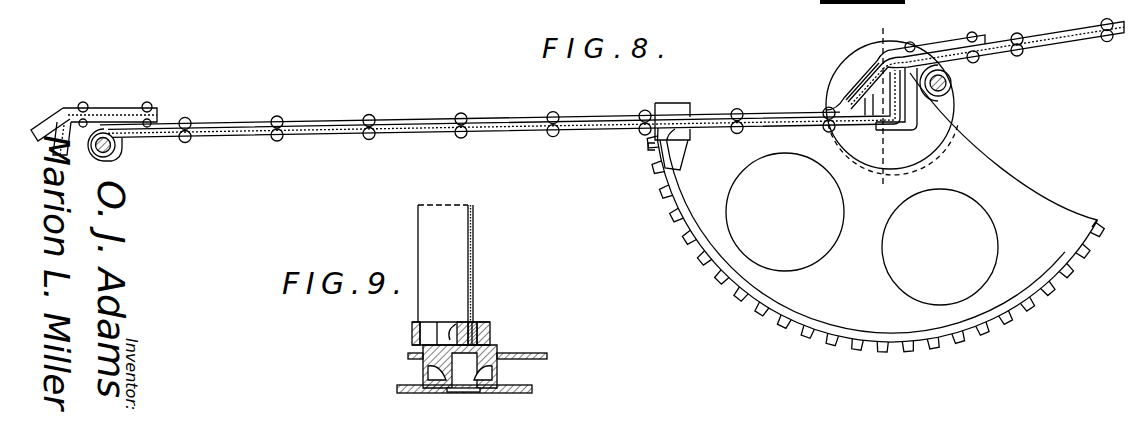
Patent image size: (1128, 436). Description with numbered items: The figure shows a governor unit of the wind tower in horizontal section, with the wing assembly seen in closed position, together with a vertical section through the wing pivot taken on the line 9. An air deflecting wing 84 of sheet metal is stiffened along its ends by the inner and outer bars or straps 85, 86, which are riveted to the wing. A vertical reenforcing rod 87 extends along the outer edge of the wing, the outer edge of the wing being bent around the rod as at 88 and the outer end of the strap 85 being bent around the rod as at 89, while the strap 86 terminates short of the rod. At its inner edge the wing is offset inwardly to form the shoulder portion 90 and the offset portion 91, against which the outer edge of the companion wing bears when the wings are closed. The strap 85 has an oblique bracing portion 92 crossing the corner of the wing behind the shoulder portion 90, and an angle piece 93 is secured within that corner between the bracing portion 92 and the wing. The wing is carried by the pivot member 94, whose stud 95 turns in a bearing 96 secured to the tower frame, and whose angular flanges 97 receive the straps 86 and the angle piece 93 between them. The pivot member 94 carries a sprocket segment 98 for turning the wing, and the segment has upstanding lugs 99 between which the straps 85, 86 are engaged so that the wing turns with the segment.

In FIG. 8, the air deflecting wings 84 is at (496, 120).
In FIG. 9, the air deflecting wings 84 is at (475, 246).
In FIG. 8, the inner bars or straps 85 is at (417, 121).
In FIG. 9, the inner bars or straps 85 is at (412, 335).
In FIG. 8, the outer bars or straps 86 is at (423, 136).
In FIG. 9, the outer bars or straps 86 is at (493, 327).
In FIG. 8, the reenforcing rod 87 is at (110, 154).
In FIG. 8, the bend of wing around rod 88 is at (117, 146).
In FIG. 8, the bend of strap around rod 89 is at (103, 161).
In FIG. 8, the shoulder portions 90 is at (903, 107).
In FIG. 9, the shoulder portions 90 is at (438, 238).
In FIG. 8, the offset portions 91 is at (101, 117).
In FIG. 8, the oblique bracing portions 92 is at (858, 92).
In FIG. 8, the angle pieces 93 is at (868, 106).
In FIG. 9, the angle pieces 93 is at (452, 327).
In FIG. 8, the lower pivot member 94 is at (920, 125).
In FIG. 9, the lower pivot member 94 is at (490, 350).
In FIG. 9, the stud 95 is at (460, 391).
In FIG. 8, the bearing 96 is at (953, 106).
In FIG. 9, the bearing 96 is at (500, 392).
In FIG. 8, the angular flanges 97 is at (878, 140).
In FIG. 9, the angular flanges 97 is at (480, 320).
In FIG. 8, the sprocket segment 98 is at (987, 183).
In FIG. 9, the sprocket segment 98 is at (537, 352).
In FIG. 8, the upstanding lugs 99 is at (676, 108).
In FIG. 8, the section line 9- 9 is at (882, 103).